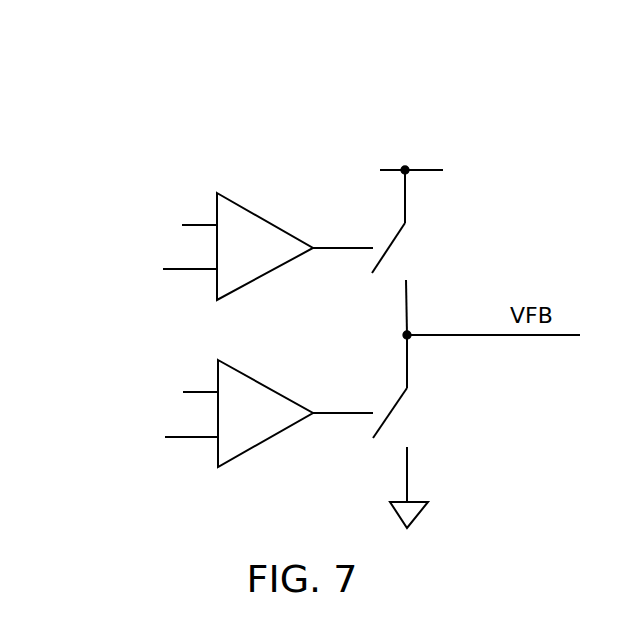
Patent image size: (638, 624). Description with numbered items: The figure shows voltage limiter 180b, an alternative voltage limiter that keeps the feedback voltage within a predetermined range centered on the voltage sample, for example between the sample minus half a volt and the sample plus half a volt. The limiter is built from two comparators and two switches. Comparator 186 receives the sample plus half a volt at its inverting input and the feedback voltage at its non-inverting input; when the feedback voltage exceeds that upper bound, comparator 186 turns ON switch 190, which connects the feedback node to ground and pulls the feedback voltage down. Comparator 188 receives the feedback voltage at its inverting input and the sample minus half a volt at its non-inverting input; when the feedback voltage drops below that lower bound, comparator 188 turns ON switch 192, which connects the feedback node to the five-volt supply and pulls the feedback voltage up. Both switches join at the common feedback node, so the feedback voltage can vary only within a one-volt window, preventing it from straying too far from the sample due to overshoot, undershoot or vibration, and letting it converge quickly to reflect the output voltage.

The voltage limiter 180b is at (158, 78).
The comparator 186 is at (262, 445).
The comparator 188 is at (262, 277).
The switch 190 is at (413, 427).
The switch 192 is at (417, 262).